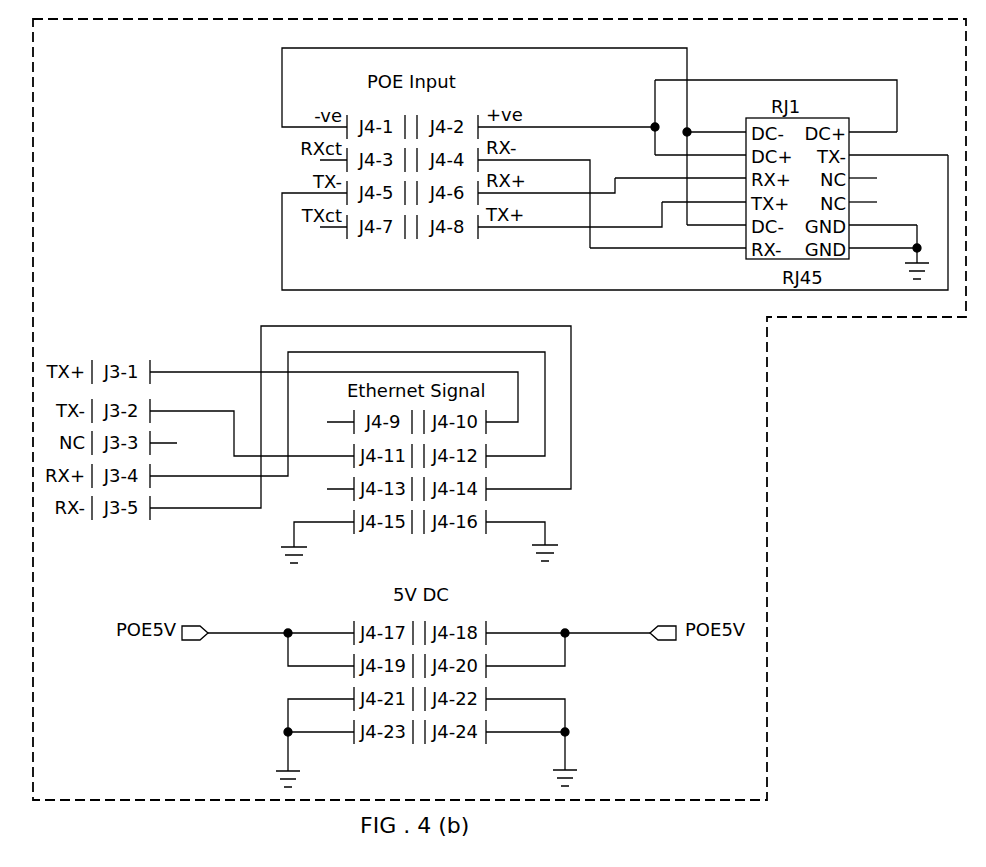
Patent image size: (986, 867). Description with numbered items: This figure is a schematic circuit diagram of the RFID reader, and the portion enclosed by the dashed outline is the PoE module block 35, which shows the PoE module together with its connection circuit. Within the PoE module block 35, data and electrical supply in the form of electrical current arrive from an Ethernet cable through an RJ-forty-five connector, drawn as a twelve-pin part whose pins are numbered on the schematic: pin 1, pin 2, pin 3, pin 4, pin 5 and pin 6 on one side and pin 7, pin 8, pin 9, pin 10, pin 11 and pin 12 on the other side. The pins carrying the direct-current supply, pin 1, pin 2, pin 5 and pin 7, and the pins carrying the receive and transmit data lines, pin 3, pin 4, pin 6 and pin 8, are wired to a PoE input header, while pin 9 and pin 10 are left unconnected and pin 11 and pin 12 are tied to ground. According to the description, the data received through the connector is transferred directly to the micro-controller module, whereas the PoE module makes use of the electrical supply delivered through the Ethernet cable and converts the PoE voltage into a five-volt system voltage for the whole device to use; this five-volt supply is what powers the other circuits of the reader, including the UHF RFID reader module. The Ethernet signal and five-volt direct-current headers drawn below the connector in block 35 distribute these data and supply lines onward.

The PoE module block 35 is at (767, 558).
The RJ1 pin 1 (DC-) 1 is at (716, 123).
The RJ1 pin 2 (DC+) 2 is at (700, 146).
The RJ1 pin 3 (RX+) 3 is at (680, 169).
The RJ1 pin 4 (TX+) 4 is at (704, 193).
The RJ1 pin 5 (DC-) 5 is at (716, 216).
The RJ1 pin 6 (RX-) 6 is at (668, 239).
The RJ1 pin 7 (DC+) 7 is at (873, 123).
The RJ1 pin 8 (TX-) 8 is at (898, 146).
The RJ1 pin 9 (NC) 9 is at (863, 169).
The RJ1 pin 10 (NC) 10 is at (865, 193).
The RJ1 pin 11 (GND) 11 is at (883, 216).
The RJ1 pin 12 (GND) 12 is at (883, 239).